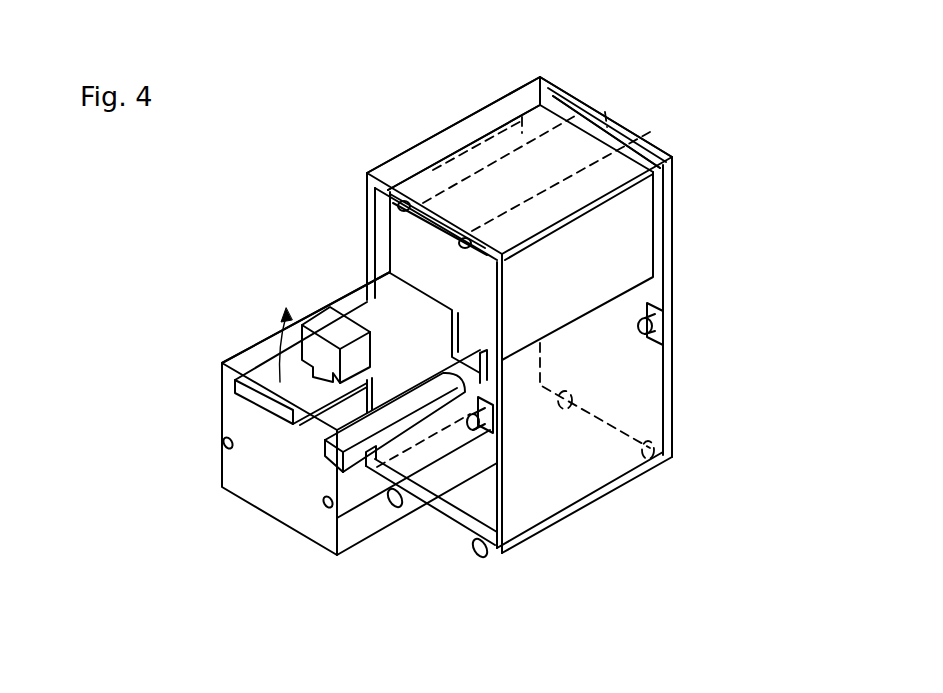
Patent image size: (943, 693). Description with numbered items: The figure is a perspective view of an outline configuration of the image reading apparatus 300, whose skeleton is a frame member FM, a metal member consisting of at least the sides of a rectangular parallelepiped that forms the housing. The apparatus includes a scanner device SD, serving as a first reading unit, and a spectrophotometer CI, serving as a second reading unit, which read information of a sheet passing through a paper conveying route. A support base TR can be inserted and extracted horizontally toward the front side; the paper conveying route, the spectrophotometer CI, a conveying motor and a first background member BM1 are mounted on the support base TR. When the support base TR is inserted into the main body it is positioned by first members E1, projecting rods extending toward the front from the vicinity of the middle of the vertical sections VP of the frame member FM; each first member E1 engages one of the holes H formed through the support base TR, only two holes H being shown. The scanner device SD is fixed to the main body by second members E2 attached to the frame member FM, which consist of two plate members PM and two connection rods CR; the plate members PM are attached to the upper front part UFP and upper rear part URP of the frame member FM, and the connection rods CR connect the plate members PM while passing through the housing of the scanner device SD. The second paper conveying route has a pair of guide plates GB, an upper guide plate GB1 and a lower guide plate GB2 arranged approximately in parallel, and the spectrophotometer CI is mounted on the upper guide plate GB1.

The image reading apparatus 300 is at (745, 102).
The frame member FM is at (645, 478).
The upper front part UFP is at (385, 187).
The upper rear part URP is at (660, 148).
The vertical section VP is at (680, 228).
The plate member PM is at (545, 90).
The scanner device SD is at (478, 148).
The connection rod CR is at (522, 132).
The first member E1 is at (665, 328).
The second member E2 is at (612, 108).
The support base TR is at (357, 537).
The guide plates GB is at (227, 262).
The upper guide plate GB1 is at (263, 378).
The lower guide plate GB2 is at (240, 393).
The hole H is at (238, 447).
The first background member BM1 is at (400, 438).
The spectrophotometer CI is at (323, 318).